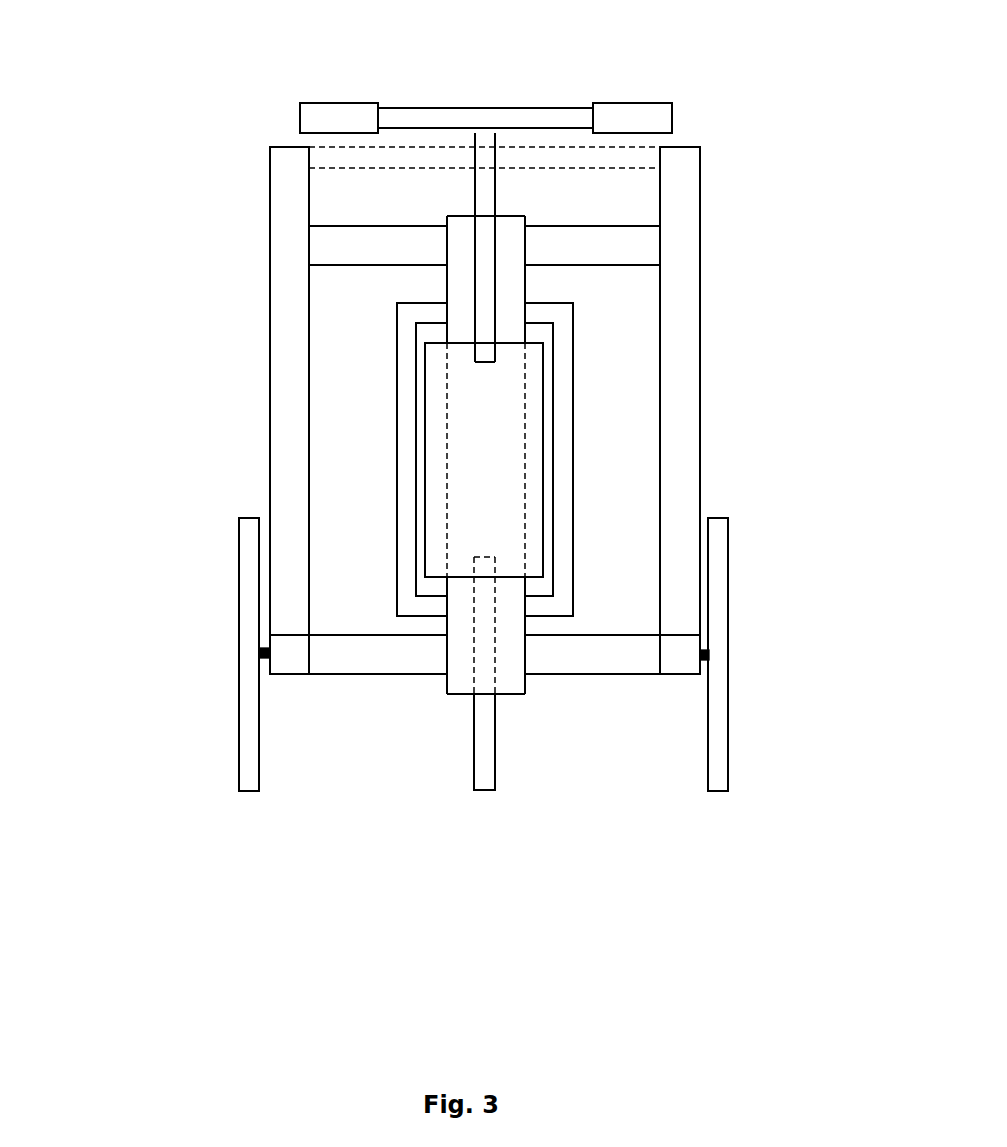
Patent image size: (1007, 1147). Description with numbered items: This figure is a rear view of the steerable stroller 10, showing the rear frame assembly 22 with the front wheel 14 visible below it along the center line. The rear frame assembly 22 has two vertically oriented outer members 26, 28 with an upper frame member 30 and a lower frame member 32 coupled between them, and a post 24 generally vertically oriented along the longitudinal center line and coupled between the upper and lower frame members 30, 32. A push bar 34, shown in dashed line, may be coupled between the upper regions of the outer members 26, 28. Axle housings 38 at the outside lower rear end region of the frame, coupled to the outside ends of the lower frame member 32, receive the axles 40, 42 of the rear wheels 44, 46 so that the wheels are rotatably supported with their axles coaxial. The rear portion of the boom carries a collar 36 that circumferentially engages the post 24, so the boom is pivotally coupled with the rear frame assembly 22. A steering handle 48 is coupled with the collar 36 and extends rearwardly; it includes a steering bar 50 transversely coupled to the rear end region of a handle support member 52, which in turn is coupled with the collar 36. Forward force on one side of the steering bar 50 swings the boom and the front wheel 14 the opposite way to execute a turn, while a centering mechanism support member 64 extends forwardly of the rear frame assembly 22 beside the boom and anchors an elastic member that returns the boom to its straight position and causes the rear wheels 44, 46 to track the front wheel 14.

The steerable stroller 10 is at (516, 44).
The front wheel 14 is at (485, 790).
The rear frame assembly 22 is at (176, 143).
The post 24 is at (525, 277).
The outer member 26 is at (270, 390).
The outer member 28 is at (700, 283).
The upper frame member 30 is at (378, 226).
The lower frame member 32 is at (593, 674).
The push bar 34 is at (628, 168).
The collar 36 is at (543, 460).
The axle housings 38 is at (290, 674).
The axle 40 is at (263, 660).
The axle 42 is at (705, 660).
The rear wheel 44 is at (250, 518).
The rear wheel 46 is at (728, 615).
The steering handle 48 is at (553, 80).
The steering bar 50 is at (417, 108).
The handle support member 52 is at (495, 245).
The centering mechanism support member 64 is at (573, 382).